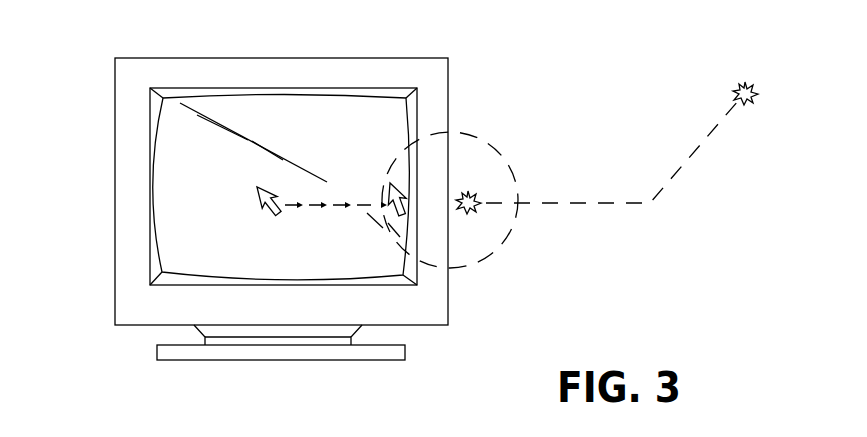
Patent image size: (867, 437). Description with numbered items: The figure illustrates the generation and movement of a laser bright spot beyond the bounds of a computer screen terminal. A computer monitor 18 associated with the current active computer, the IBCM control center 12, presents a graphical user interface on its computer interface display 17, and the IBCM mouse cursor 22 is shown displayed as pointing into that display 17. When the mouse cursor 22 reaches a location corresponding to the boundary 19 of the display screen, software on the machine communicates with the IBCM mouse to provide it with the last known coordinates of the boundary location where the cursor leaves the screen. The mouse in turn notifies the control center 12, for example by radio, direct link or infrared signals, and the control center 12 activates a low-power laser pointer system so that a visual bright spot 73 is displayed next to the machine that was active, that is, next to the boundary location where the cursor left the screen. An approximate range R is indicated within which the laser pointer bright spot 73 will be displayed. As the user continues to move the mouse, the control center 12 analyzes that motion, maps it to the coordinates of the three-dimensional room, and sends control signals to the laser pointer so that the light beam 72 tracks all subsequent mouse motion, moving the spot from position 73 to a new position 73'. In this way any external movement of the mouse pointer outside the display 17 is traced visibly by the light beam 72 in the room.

The IBCM control center 12 is at (147, 51).
The computer interface display 17 is at (172, 158).
The computer monitor 18 is at (115, 252).
The boundary of the display screen 19 is at (404, 183).
The IBCM mouse cursor 22 is at (262, 217).
The approximate range R is at (482, 137).
The light beam 72 is at (612, 203).
The visual bright spot 73 is at (498, 246).
The new position of light spot 73' is at (768, 61).